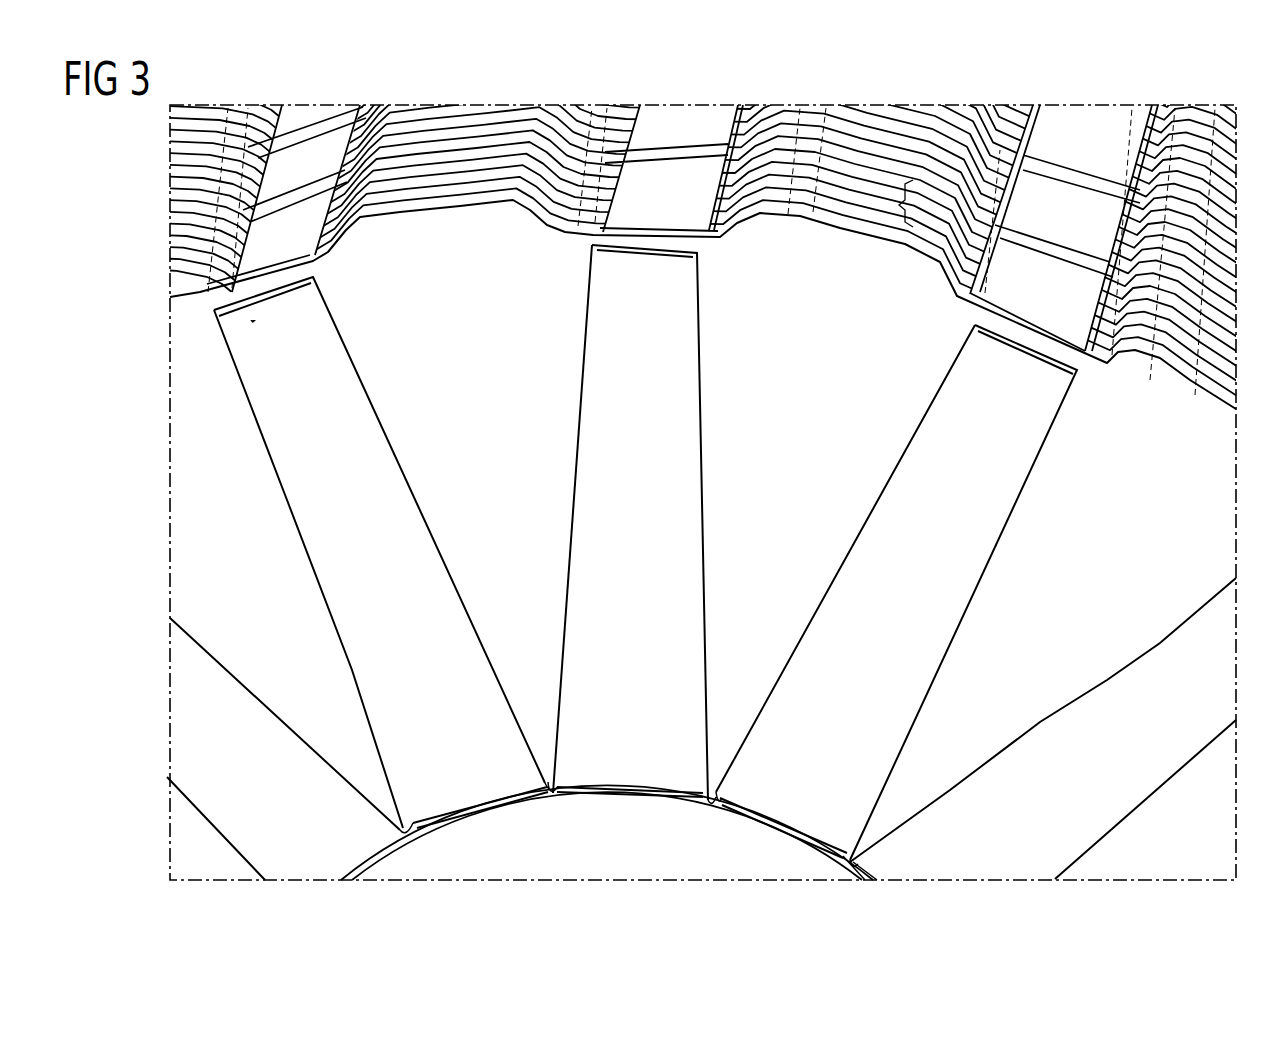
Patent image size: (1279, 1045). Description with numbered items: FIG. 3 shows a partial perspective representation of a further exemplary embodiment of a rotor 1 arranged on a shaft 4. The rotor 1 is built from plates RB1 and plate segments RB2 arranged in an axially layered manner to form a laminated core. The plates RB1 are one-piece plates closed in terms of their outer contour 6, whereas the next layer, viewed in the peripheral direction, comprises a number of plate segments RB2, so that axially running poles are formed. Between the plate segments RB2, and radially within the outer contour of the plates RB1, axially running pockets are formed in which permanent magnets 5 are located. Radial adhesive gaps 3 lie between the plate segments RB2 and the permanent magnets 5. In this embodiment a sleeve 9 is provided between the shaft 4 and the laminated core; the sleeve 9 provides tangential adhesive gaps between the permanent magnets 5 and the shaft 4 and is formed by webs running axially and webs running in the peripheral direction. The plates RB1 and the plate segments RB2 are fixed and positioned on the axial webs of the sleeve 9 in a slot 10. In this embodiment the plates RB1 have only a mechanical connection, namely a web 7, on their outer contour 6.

The rotor 1 is at (1228, 524).
The radial adhesive gap 3 is at (611, 555).
The shaft 4 is at (590, 867).
The permanent magnet 5 is at (595, 413).
The outer contour 6 is at (691, 224).
The web 7 is at (1037, 258).
The sleeve 9 is at (628, 797).
The slot 10 is at (549, 797).
The plate RB1 is at (801, 492).
The plate segment RB2 is at (881, 203).